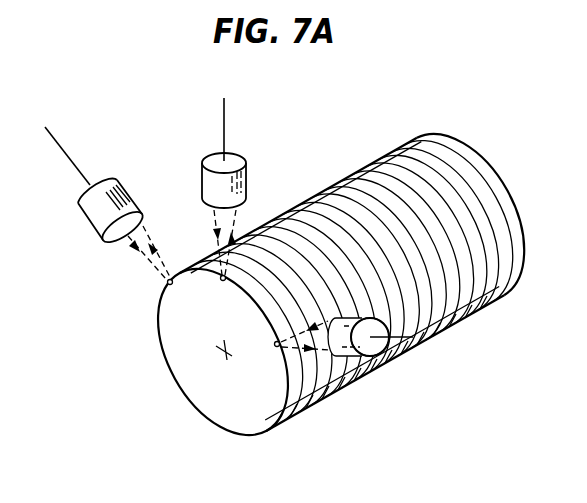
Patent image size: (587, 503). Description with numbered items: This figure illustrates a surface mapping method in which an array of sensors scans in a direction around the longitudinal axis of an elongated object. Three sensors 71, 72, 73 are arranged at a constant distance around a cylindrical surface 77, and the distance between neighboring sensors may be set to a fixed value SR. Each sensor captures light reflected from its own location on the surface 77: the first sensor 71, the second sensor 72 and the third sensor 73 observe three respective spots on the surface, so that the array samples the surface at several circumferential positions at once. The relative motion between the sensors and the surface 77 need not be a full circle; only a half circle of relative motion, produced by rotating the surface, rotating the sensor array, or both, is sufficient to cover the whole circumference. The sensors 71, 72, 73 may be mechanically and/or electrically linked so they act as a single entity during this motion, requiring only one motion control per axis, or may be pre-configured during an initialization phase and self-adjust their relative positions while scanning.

The sensor 71 is at (87, 226).
The sensor 72 is at (200, 182).
The sensor 73 is at (360, 358).
The cylindrical surface 77 is at (370, 166).
The fixed distance between sensors SR is at (220, 116).